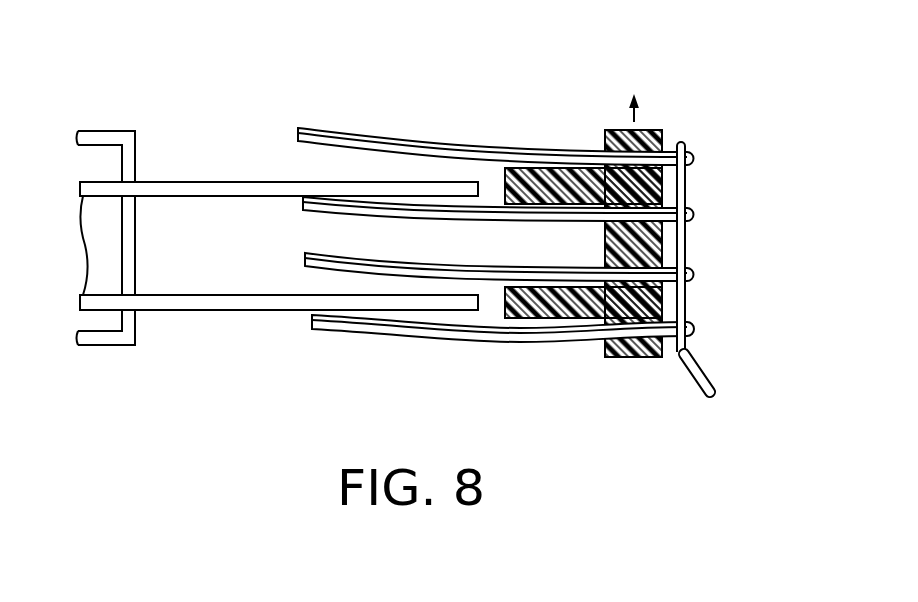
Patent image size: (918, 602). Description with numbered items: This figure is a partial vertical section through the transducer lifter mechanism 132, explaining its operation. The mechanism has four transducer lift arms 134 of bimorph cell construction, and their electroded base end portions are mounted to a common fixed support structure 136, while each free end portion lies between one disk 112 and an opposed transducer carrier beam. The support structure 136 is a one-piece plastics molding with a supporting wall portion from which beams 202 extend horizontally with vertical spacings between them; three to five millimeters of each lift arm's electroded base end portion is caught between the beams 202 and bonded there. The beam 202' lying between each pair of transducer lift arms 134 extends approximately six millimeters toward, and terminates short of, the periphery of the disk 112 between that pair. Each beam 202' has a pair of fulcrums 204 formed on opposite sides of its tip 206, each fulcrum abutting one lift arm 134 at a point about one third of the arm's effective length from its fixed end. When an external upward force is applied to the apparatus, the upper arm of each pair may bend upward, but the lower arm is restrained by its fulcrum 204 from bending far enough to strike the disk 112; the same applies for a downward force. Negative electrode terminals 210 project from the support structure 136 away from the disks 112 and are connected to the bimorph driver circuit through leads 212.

The disk 112 is at (205, 181).
The transducer lifter mechanism 132 is at (481, 214).
The transducer lift arm 134 is at (336, 128).
The support structure 136 is at (697, 222).
The beam 202 is at (697, 243).
The beam 202' is at (573, 252).
The fulcrum 204 is at (507, 285).
The tip 206 is at (496, 290).
The negative electrode terminal 210 is at (687, 152).
The lead 212 is at (713, 392).